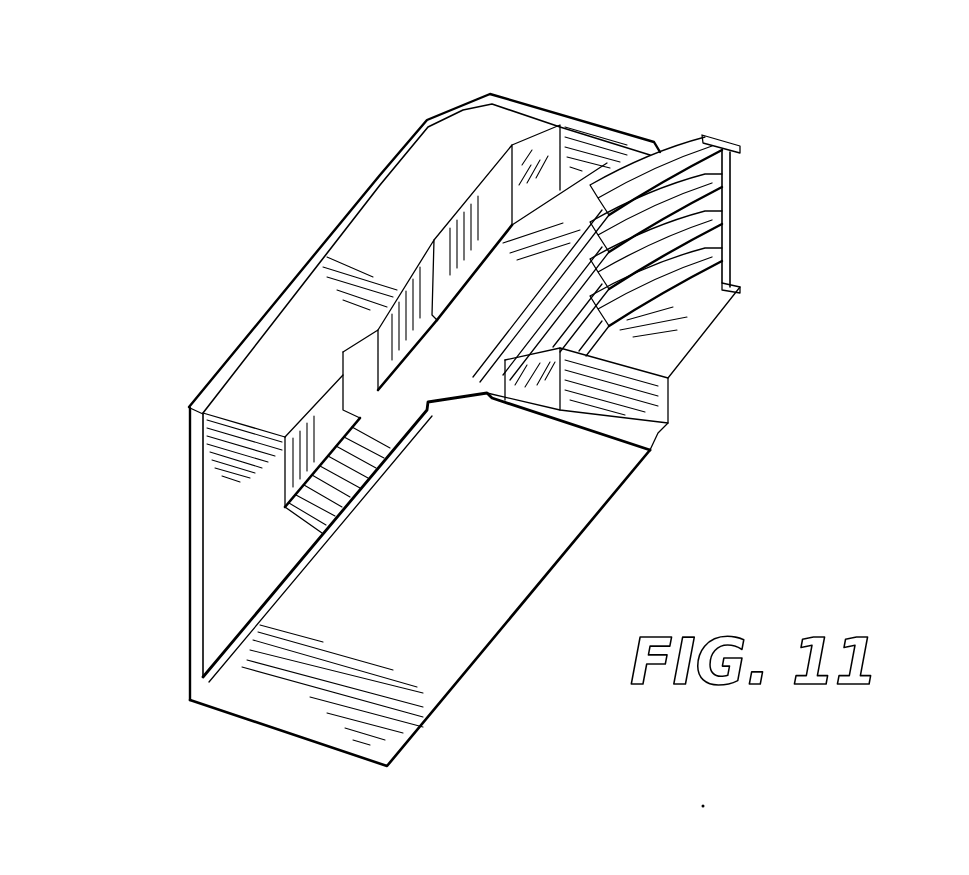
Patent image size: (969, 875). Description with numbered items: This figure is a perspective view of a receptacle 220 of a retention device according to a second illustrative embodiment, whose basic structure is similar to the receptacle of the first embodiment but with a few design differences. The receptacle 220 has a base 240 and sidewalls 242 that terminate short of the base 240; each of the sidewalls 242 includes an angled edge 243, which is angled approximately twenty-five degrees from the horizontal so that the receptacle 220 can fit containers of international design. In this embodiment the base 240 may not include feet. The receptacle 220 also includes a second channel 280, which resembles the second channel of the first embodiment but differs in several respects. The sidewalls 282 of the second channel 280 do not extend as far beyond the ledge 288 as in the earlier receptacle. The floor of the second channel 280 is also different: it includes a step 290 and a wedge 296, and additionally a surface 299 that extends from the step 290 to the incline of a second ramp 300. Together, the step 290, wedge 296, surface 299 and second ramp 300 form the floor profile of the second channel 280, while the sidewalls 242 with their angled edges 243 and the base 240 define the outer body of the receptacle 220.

The receptacle 220 is at (158, 529).
The base 240 is at (725, 142).
The sidewalls 242 is at (282, 713).
The angled edge 243 is at (660, 437).
The second channel 280 is at (364, 260).
The sidewalls 282 is at (302, 337).
The ledge 288 is at (312, 408).
The step 290 is at (438, 237).
The wedge 296 is at (358, 355).
The surface 299 is at (490, 202).
The second ramp 300 is at (535, 158).